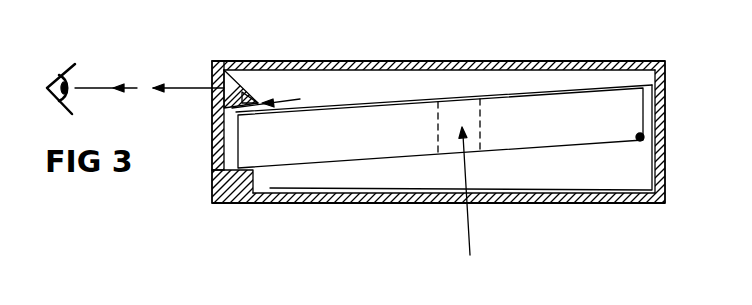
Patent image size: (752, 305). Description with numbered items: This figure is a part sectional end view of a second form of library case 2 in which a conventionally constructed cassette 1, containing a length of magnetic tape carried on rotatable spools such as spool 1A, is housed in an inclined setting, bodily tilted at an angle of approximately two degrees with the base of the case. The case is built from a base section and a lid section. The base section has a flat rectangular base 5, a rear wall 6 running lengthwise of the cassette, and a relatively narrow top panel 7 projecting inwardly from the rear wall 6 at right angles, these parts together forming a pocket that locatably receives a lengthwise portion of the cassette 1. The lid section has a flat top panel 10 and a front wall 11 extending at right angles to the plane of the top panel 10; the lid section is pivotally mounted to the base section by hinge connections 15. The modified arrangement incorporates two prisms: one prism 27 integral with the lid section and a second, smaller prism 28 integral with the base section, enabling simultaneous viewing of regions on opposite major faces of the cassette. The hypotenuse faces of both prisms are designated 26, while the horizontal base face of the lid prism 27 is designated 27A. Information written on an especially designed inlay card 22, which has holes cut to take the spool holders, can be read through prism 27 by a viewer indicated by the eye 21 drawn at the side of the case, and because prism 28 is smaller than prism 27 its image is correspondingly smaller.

The cassette 1 is at (444, 126).
The rotatable spool 1A is at (482, 210).
The library case 2 is at (652, 212).
The base 5 is at (370, 204).
The rear wall 6 is at (664, 113).
The top panel 7 is at (485, 190).
The flat top panel 10 is at (472, 59).
The front wall 11 is at (149, 107).
The hinge connection 15 is at (634, 144).
The observer eye 21 is at (44, 68).
The inlay card 22 is at (378, 98).
The hypotenuse face 26 is at (250, 80).
The prism 27 is at (235, 86).
The horizontal base face 27A is at (222, 115).
The prism 28 is at (228, 181).